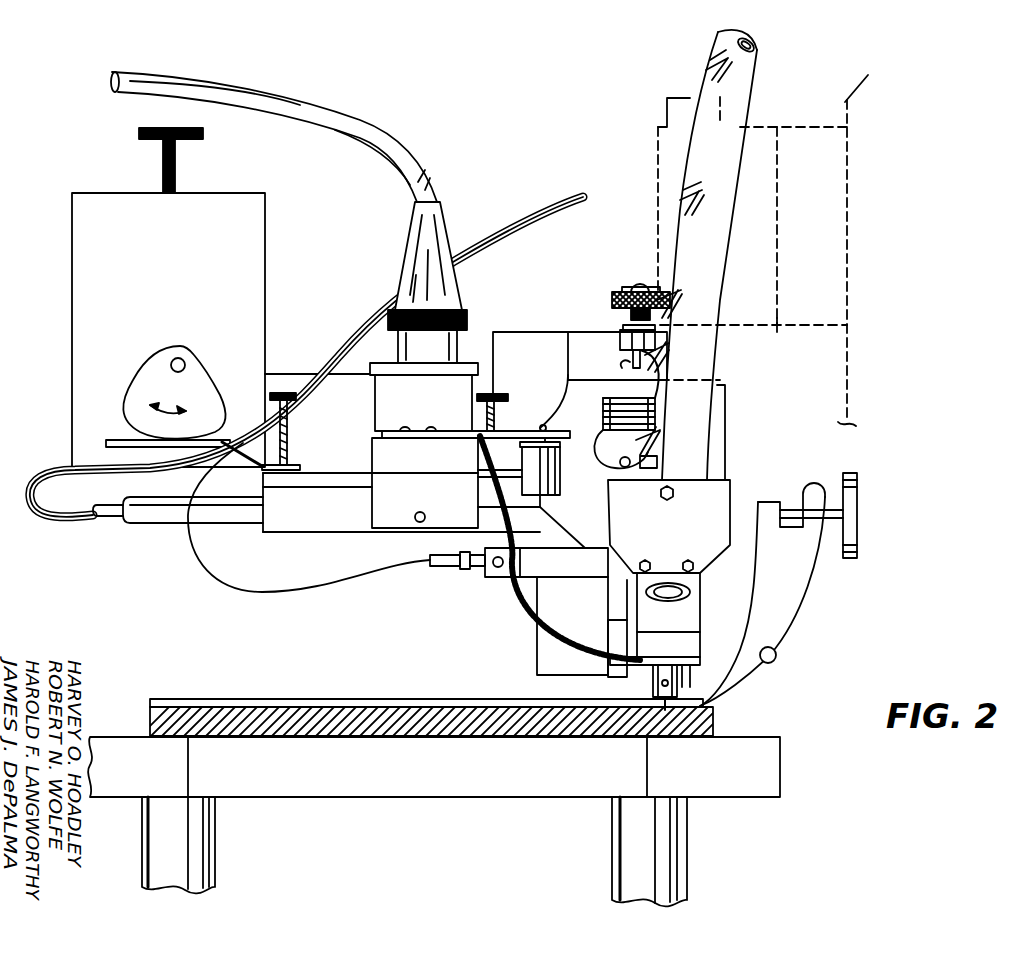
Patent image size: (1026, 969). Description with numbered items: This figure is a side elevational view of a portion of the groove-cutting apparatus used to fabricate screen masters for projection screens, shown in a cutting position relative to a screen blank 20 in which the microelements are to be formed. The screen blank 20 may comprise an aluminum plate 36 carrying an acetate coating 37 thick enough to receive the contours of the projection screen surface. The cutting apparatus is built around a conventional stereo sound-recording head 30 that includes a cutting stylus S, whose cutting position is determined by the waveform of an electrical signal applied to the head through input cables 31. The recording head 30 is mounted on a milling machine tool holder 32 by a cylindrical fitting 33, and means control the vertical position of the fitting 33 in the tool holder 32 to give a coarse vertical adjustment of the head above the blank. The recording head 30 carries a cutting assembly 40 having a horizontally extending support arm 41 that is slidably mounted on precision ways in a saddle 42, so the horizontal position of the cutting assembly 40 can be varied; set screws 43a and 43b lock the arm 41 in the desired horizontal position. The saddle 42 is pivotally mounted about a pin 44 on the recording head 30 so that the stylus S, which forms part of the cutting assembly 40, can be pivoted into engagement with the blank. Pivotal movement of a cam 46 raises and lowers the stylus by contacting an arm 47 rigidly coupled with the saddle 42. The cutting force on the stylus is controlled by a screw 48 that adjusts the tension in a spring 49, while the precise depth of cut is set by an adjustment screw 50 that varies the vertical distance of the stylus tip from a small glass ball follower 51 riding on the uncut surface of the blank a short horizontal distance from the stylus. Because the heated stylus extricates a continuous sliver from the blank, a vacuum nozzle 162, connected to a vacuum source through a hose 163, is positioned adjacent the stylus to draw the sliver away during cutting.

The screen blank 20 is at (140, 710).
The stereo sound-recording head 30 is at (508, 292).
The input cables 31 is at (395, 137).
The milling machine tool holder 32 is at (825, 211).
The cylindrical fitting 33 is at (667, 112).
The aluminum plate 36 is at (713, 720).
The acetate coating 37 is at (318, 699).
The cutting assembly 40 is at (443, 600).
The support arm 41 is at (165, 523).
The saddle 42 is at (324, 526).
The set screw 43a is at (295, 405).
The set screw 43b is at (503, 398).
The pin 44 is at (425, 512).
The cam 46 is at (184, 401).
The arm 47 is at (113, 440).
The screw 48 is at (612, 298).
The spring 49 is at (603, 416).
The adjustment screw 50 is at (857, 505).
The glass ball follower 51 is at (703, 706).
The vacuum nozzle 162 is at (645, 701).
The hose 163 is at (690, 158).